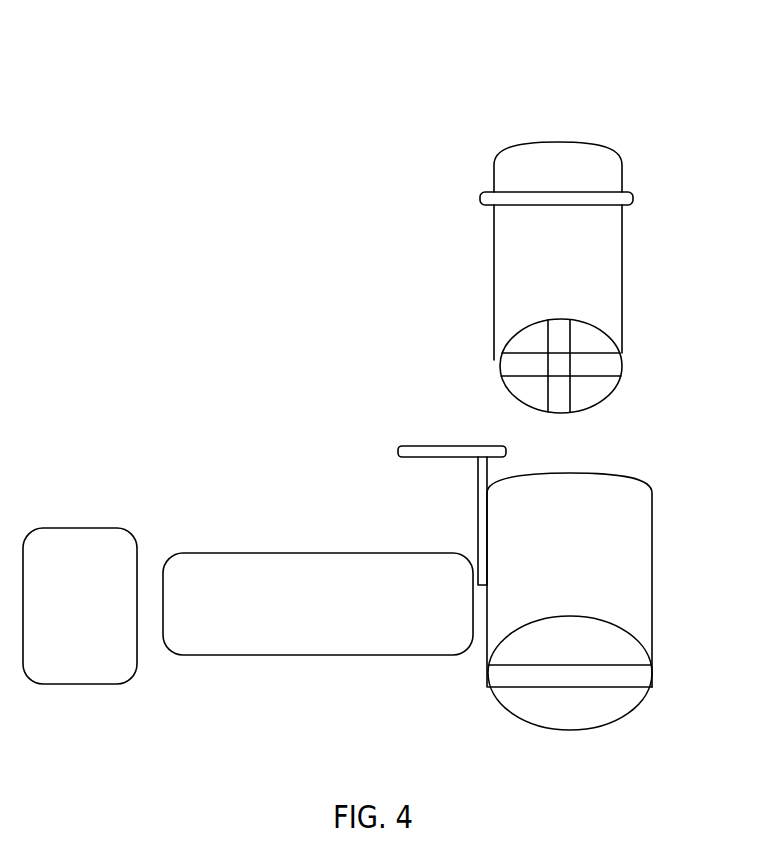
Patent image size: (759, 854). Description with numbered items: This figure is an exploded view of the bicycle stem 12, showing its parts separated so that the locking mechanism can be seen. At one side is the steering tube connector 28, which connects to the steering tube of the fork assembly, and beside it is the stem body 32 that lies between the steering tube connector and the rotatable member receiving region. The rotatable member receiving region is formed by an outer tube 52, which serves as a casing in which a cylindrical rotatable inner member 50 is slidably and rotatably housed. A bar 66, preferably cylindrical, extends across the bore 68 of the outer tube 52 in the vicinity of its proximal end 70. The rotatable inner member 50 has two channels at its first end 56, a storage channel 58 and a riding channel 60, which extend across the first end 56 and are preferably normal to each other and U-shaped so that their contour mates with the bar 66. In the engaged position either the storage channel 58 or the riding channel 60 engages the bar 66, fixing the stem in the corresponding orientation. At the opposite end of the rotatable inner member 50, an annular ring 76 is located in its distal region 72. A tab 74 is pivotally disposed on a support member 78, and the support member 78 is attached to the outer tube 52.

The bicycle stem 12 is at (440, 97).
The steering tube connector 28 is at (82, 553).
The stem body 32 is at (290, 575).
The rotatable inner member 50 is at (618, 253).
The outer tube 52 is at (649, 551).
The first end 56 is at (602, 350).
The storage channel 58 is at (560, 403).
The riding channel 60 is at (610, 372).
The bar 66 is at (648, 698).
The bore 68 is at (575, 710).
The proximal end 70 is at (649, 645).
The distal region 72 is at (495, 183).
The tab 74 is at (412, 447).
The annular ring 76 is at (634, 194).
The support member 78 is at (478, 477).